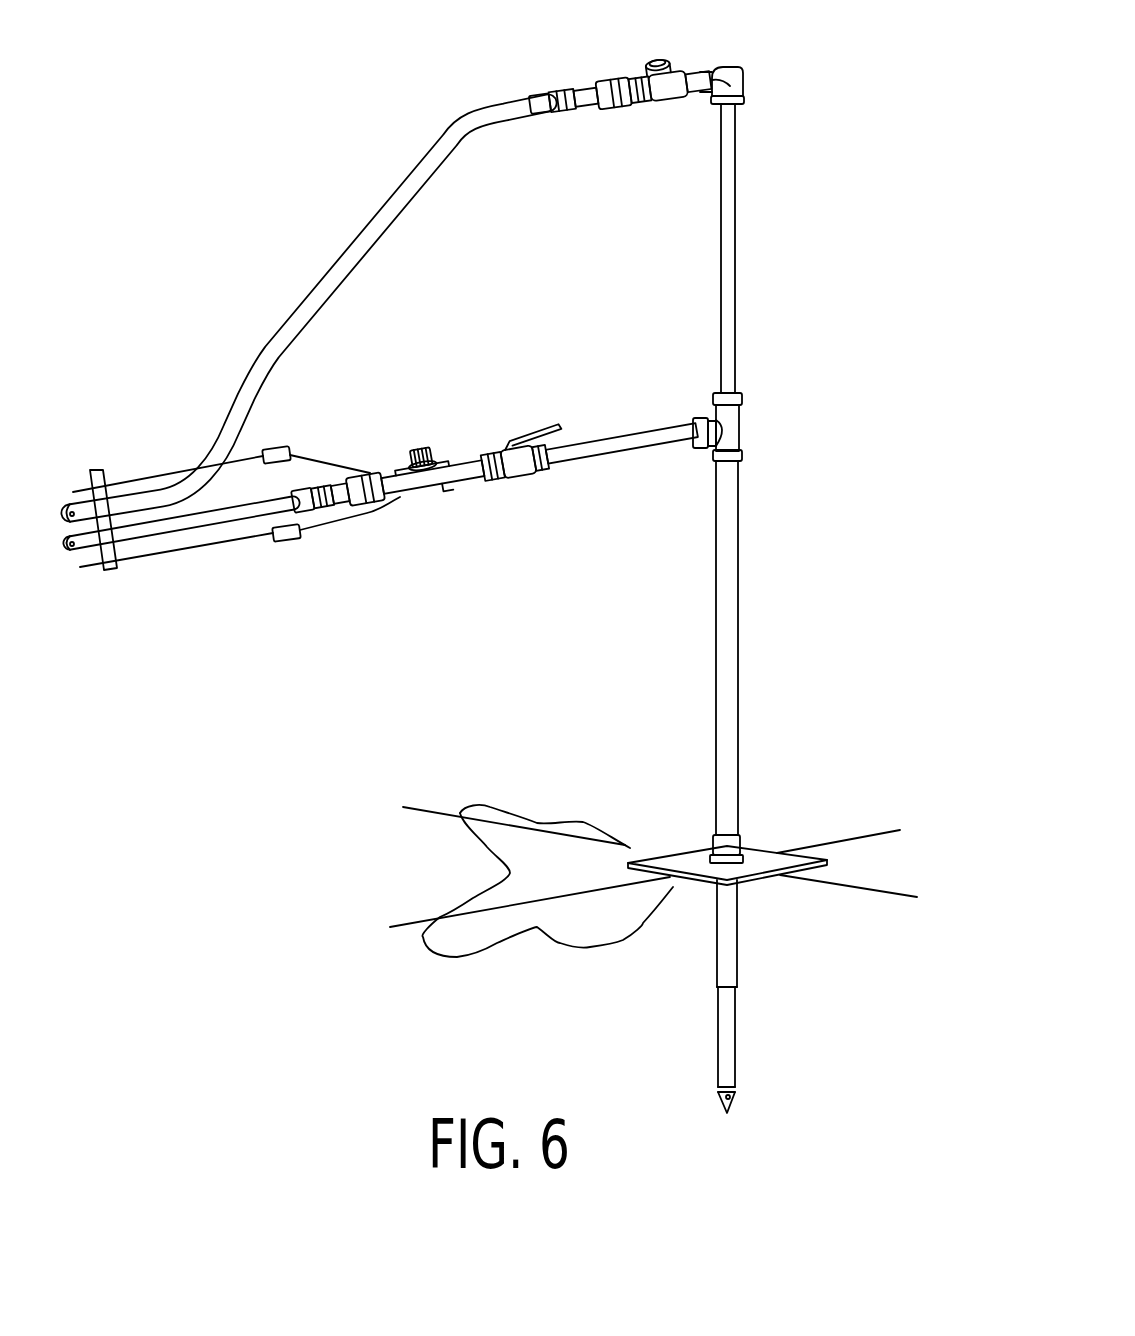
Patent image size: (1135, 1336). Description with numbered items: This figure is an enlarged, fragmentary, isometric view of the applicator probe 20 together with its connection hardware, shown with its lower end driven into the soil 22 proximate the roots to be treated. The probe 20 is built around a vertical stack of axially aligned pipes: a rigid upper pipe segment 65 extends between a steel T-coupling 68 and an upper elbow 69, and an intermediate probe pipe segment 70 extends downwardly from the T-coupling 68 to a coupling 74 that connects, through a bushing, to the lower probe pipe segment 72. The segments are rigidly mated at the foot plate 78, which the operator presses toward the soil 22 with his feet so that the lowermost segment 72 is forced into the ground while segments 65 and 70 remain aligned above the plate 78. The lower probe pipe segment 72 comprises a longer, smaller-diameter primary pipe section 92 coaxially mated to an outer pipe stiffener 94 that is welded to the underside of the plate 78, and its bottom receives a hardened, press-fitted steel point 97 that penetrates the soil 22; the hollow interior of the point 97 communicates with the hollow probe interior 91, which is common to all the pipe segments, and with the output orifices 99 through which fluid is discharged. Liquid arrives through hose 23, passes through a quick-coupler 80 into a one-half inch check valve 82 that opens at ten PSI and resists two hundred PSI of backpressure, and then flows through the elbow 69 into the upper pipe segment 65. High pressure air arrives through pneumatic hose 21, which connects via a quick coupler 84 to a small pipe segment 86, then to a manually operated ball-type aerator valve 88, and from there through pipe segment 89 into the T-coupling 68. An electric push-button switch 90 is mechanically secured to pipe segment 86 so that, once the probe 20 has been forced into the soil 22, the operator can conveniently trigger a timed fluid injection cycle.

The applicator probe 20 is at (820, 435).
The pneumatic hose 21 is at (218, 518).
The soil 22 is at (557, 880).
The hose 23 is at (367, 250).
The upper pipe segment 65 is at (736, 280).
The T-coupling 68 is at (742, 440).
The upper elbow 69 is at (735, 75).
The intermediate probe pipe segment 70 is at (739, 635).
The lower probe pipe segment 72 is at (697, 907).
The coupling 74 is at (740, 845).
The foot plate 78 is at (697, 863).
The quick-coupler 80 is at (613, 106).
The check valve 82 is at (667, 92).
The quick coupler 84 is at (367, 503).
The pipe segment 86 is at (462, 482).
The aerator valve 88 is at (505, 442).
The pipe segment 89 is at (612, 448).
The push-button switch 90 is at (425, 452).
The probe interior 91 is at (130, 473).
The primary pipe section 92 is at (160, 553).
The outer pipe stiffener 94 is at (733, 923).
The steel point 97 is at (730, 1115).
The output orifices 99 is at (732, 1097).